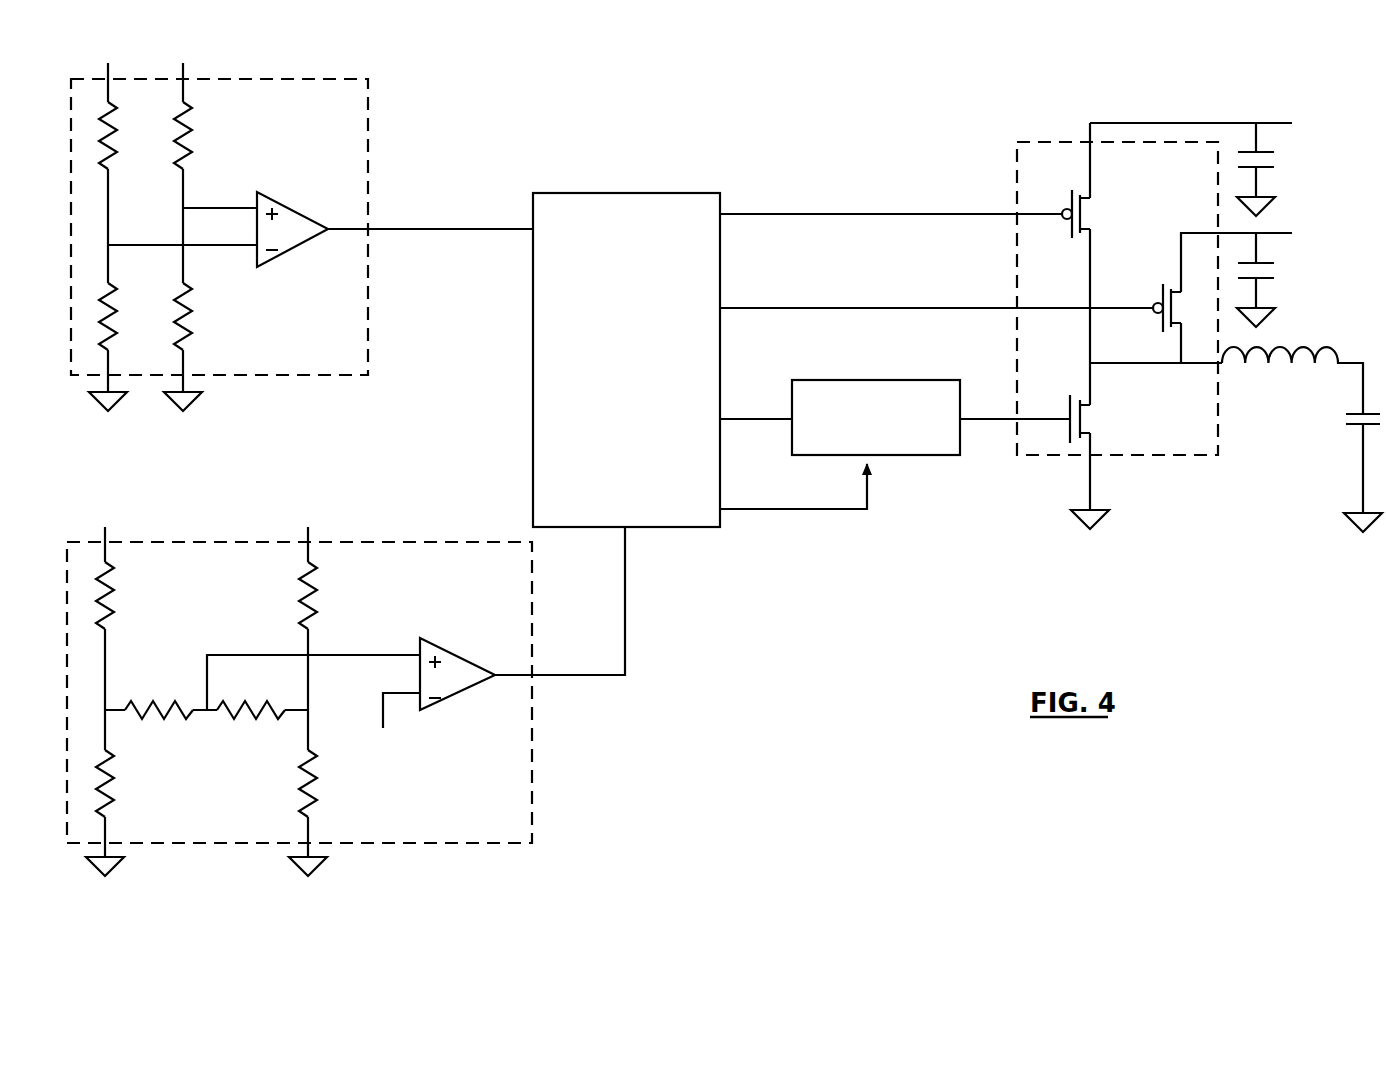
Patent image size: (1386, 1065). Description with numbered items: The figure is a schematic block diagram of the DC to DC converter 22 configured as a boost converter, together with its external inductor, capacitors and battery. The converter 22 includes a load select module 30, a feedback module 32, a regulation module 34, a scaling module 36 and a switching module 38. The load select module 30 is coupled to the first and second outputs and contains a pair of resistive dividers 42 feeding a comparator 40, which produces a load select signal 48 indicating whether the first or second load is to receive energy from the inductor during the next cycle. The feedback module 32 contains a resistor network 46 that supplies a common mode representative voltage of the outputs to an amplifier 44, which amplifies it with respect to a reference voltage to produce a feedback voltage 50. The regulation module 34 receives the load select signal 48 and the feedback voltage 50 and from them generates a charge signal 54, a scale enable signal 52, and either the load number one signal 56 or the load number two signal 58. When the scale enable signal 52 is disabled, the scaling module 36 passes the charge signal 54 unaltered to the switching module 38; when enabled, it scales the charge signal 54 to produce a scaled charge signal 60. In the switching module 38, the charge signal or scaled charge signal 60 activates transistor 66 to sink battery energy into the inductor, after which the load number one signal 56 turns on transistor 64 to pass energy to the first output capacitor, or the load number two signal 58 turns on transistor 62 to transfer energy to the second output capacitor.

The DC to DC converter 22 is at (1182, 747).
The load select module 30 is at (219, 220).
The feedback module 32 is at (299, 684).
The regulation module 34 is at (626, 360).
The scaling module 36 is at (876, 417).
The switching module 38 is at (1154, 326).
The comparator 40 is at (295, 214).
The resistive dividers 42 is at (135, 162).
The amplifier 44 is at (426, 687).
The resistor network 46 is at (202, 740).
The load select signal 48 is at (430, 196).
The feedback voltage 50 is at (583, 634).
The scale enable signal 52 is at (818, 519).
The charge signal 54 is at (756, 410).
The load number 1 signal 56 is at (936, 292).
The load number 2 signal 58 is at (891, 198).
The scaled charge signal 60 is at (977, 430).
The transistor 62 is at (1096, 214).
The transistor 64 is at (1207, 298).
The transistor 66 is at (1100, 419).